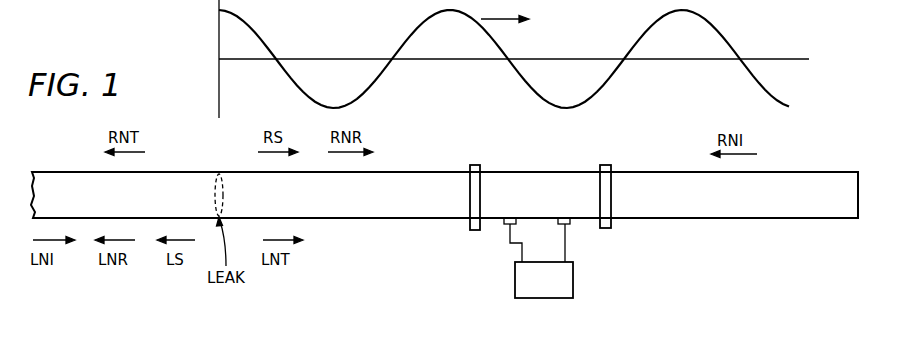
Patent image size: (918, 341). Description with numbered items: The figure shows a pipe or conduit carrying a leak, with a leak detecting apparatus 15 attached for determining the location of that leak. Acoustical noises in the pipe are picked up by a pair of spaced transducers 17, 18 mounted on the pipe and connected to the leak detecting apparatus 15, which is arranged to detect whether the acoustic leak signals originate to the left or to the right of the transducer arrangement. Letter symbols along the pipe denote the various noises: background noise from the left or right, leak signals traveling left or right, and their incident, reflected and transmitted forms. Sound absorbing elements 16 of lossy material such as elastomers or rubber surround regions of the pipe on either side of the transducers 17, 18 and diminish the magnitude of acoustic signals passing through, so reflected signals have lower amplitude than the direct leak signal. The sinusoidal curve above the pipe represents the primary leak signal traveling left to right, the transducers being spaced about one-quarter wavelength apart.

The leak detecting apparatus 15 is at (556, 292).
The sound absorbing elements 16 is at (473, 230).
The transducer 17 is at (505, 225).
The transducer 18 is at (570, 222).